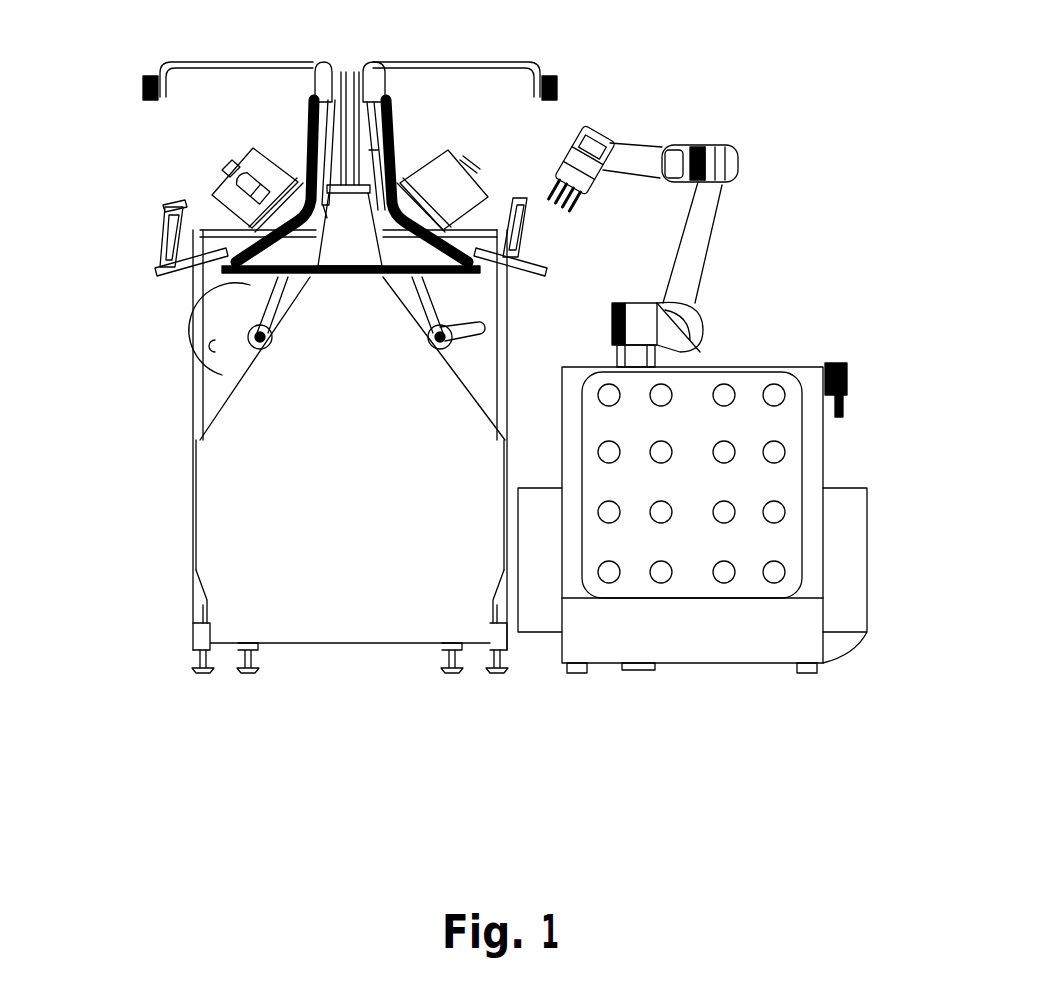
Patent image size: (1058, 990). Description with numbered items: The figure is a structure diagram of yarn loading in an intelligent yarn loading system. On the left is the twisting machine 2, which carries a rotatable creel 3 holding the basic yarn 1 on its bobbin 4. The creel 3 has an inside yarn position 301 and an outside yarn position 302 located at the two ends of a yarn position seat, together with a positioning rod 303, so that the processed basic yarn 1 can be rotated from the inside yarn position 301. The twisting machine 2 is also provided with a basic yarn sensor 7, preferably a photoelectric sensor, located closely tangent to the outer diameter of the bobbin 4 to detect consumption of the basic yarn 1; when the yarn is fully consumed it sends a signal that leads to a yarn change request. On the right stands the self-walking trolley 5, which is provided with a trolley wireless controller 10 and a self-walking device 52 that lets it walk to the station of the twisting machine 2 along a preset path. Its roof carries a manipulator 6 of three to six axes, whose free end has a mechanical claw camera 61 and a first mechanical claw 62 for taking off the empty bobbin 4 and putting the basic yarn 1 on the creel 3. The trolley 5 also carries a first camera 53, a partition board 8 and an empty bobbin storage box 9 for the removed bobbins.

The basic yarn 1 is at (353, 220).
The twisting machine 2 is at (407, 137).
The creel 3 is at (455, 212).
The bobbin 4 is at (170, 205).
The self-walking trolley 5 is at (750, 362).
The manipulator 6 is at (698, 230).
The basic yarn sensor 7 is at (299, 168).
The partition board 8 is at (783, 417).
The empty bobbin storage box 9 is at (847, 528).
The trolley wireless controller 10 is at (850, 372).
The self-walking device 52 is at (812, 667).
The first camera 53 is at (840, 370).
The mechanical claw camera 61 is at (653, 167).
The first mechanical claw 62 is at (617, 138).
The inside yarn position 301 is at (224, 158).
The outside yarn position 302 is at (175, 188).
The positioning rod 303 is at (175, 232).